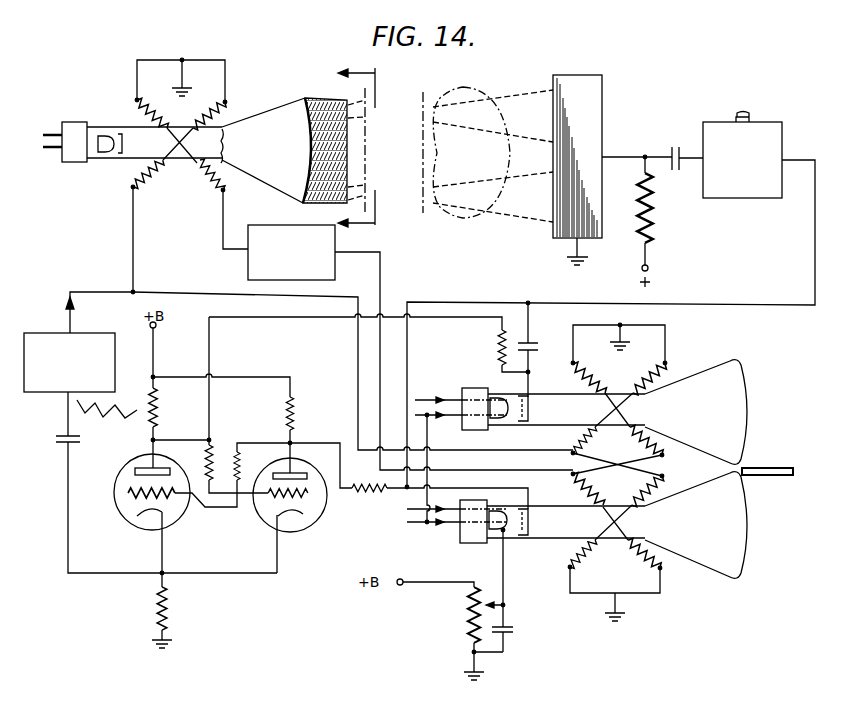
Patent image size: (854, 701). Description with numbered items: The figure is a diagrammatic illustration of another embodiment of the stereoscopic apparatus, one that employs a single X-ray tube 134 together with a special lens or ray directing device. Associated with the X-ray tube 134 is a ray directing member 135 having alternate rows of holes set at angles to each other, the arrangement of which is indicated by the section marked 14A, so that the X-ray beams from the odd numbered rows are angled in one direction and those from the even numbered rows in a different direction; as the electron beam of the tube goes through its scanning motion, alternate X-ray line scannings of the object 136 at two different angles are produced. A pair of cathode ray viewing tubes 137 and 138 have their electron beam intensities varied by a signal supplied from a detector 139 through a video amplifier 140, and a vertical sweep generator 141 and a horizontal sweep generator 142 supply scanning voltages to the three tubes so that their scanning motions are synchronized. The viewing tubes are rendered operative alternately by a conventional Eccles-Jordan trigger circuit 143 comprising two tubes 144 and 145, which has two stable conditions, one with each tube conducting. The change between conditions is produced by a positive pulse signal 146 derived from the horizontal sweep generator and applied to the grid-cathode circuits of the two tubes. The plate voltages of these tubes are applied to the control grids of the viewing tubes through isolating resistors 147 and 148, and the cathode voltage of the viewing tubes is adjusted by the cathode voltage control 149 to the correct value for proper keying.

The X-ray tube 134 is at (103, 127).
The ray directing member 135 is at (312, 97).
The object 136 is at (492, 95).
The cathode ray viewing tube 137 is at (723, 421).
The cathode ray viewing tube 138 is at (720, 535).
The detector 139 is at (603, 104).
The video amplifier 140 is at (768, 132).
The vertical sweep generator 141 is at (248, 262).
The horizontal sweep generator 142 is at (35, 333).
The Eccles-Jordan trigger circuit 143 is at (217, 513).
The tube 144 is at (118, 502).
The tube 145 is at (295, 530).
The positive pulse signal 146 is at (95, 418).
The isolating resistor 147 is at (497, 353).
The isolating resistor 148 is at (366, 496).
The cathode voltage control 149 is at (468, 622).
The section line 14A is at (380, 152).